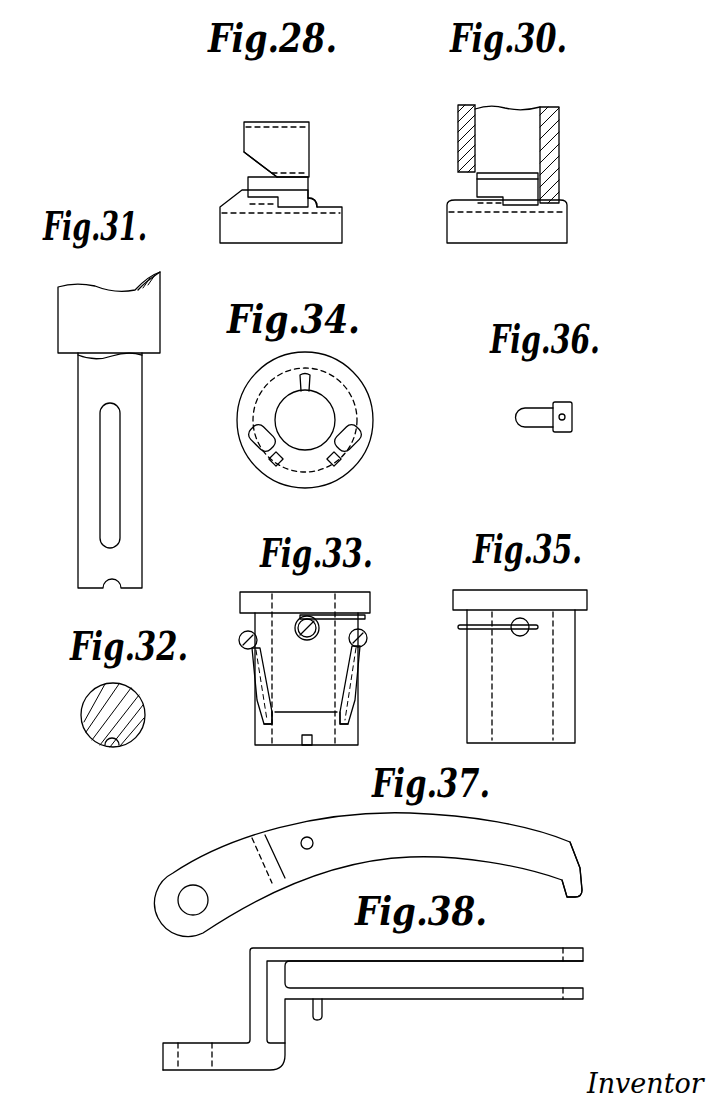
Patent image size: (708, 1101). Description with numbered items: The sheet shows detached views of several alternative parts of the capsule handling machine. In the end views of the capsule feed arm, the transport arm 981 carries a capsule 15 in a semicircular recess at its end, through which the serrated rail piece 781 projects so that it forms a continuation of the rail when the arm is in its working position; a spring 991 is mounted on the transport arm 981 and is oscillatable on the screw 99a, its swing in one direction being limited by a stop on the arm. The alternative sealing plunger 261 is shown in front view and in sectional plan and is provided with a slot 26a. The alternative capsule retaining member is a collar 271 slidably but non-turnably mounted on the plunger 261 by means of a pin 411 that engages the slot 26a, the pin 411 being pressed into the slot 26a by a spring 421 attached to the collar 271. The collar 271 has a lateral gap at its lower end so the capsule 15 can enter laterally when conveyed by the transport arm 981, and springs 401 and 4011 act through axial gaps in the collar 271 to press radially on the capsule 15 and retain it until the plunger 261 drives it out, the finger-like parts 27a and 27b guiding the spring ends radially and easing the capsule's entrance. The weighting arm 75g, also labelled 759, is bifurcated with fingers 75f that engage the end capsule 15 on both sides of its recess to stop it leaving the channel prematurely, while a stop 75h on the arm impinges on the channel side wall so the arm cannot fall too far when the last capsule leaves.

In FIG. 28, the spring 991 is at (298, 133).
In FIG. 28, the screw 99a is at (248, 163).
In FIG. 28, the capsule 15 is at (302, 188).
In FIG. 30, the capsule 15 is at (498, 185).
In FIG. 28, the serrated rail piece 781 is at (318, 200).
In FIG. 28, the transport arm 981 is at (343, 227).
In FIG. 30, the transport arm 981 is at (567, 225).
In FIG. 30, the collar 271 is at (557, 142).
In FIG. 34, the collar 271 is at (252, 387).
In FIG. 33, the collar 271 is at (252, 600).
In FIG. 35, the collar 271 is at (565, 670).
In FIG. 31, the sealing plunger 261 is at (137, 442).
In FIG. 32, the sealing plunger 261 is at (122, 703).
In FIG. 31, the slot 26a is at (113, 500).
In FIG. 32, the slot 26a is at (117, 743).
In FIG. 34, the spring 401 is at (272, 425).
In FIG. 33, the spring 401 is at (260, 677).
In FIG. 34, the spring 4011 is at (357, 440).
In FIG. 33, the spring 4011 is at (352, 677).
In FIG. 34, the finger-like part 27a is at (272, 460).
In FIG. 33, the finger-like part 27a is at (267, 717).
In FIG. 34, the finger-like part 27b is at (337, 462).
In FIG. 33, the finger-like part 27b is at (347, 717).
In FIG. 36, the pin 411 is at (535, 420).
In FIG. 35, the pin 411 is at (525, 622).
In FIG. 33, the spring 421 is at (373, 617).
In FIG. 35, the spring 421 is at (480, 628).
In FIG. 37, the weighting arm 759 is at (507, 828).
In FIG. 38, the weighting arm 759 is at (172, 1053).
In FIG. 37, the weighting arm 75g is at (368, 864).
In FIG. 38, the weighting arm 75g is at (345, 1009).
In FIG. 37, the fingers 75f is at (577, 875).
In FIG. 38, the fingers 75f is at (583, 990).
In FIG. 37, the stop 75h is at (308, 850).
In FIG. 38, the stop 75h is at (320, 1022).